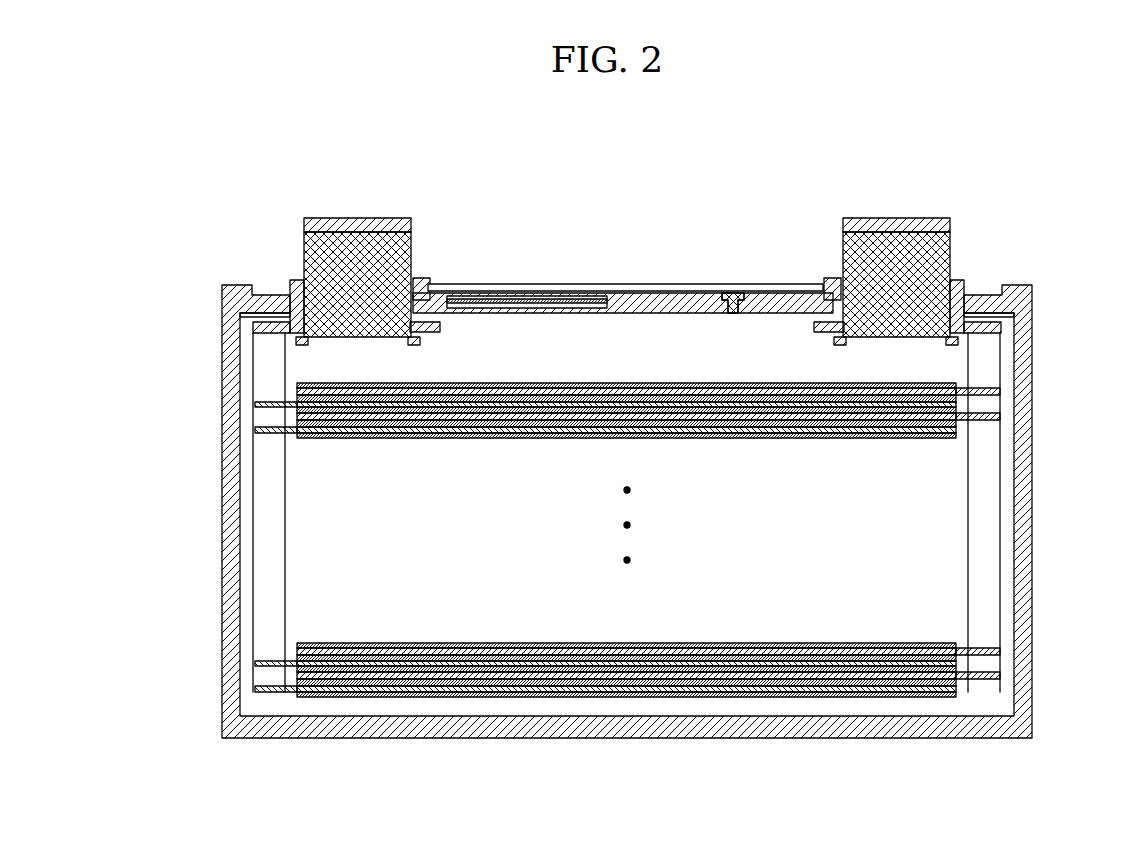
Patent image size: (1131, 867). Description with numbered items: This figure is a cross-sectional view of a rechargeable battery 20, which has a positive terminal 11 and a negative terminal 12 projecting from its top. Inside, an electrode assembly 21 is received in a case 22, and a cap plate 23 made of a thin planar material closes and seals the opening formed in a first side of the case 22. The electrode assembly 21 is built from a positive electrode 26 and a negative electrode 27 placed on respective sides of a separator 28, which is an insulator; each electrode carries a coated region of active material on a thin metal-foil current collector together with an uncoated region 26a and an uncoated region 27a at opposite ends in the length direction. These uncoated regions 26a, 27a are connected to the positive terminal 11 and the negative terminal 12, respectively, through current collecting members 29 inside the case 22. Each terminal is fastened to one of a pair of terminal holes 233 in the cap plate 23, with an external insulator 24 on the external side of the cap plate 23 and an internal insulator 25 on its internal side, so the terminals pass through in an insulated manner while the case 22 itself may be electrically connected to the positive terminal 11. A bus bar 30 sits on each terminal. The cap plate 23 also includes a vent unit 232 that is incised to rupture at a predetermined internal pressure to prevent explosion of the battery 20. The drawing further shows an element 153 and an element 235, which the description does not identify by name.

The rechargeable battery 20 is at (619, 166).
The positive terminal 11 is at (333, 232).
The negative terminal 12 is at (931, 232).
The electrode assembly 21 is at (631, 568).
The case 22 is at (222, 630).
The cap plate 23 is at (668, 293).
The external insulator 24 is at (291, 280).
The internal insulator 25 is at (285, 318).
The positive electrode 26 is at (604, 602).
The uncoated region 26a is at (272, 697).
The negative electrode 27 is at (654, 595).
The uncoated region 27a is at (982, 690).
The separator 28 is at (590, 690).
The current collecting member 29 is at (253, 333).
The bus bar 30 is at (373, 218).
The upper insulating member 153 is at (425, 280).
The vent unit 232 is at (576, 296).
The terminal hole 233 is at (837, 300).
The sealing cap 235 is at (733, 293).